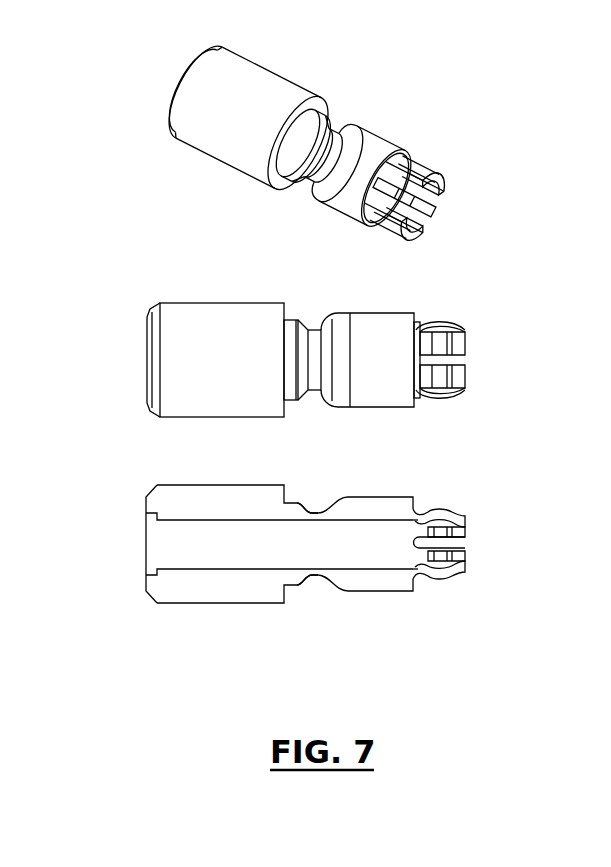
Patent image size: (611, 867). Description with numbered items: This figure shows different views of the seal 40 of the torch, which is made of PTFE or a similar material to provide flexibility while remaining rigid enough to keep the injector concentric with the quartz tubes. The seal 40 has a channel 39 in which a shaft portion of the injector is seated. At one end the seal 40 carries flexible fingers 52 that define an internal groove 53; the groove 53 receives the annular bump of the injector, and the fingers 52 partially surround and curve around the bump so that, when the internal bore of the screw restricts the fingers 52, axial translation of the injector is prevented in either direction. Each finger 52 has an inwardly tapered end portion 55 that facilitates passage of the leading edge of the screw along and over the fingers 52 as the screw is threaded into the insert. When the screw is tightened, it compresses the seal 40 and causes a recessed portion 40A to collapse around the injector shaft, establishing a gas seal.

The channel 39 is at (255, 531).
The seal 40 is at (252, 120).
The recessed portion 40A is at (310, 577).
The fingers 52 is at (432, 213).
The internal groove 53 is at (440, 578).
The tapered end portion 55 is at (483, 573).